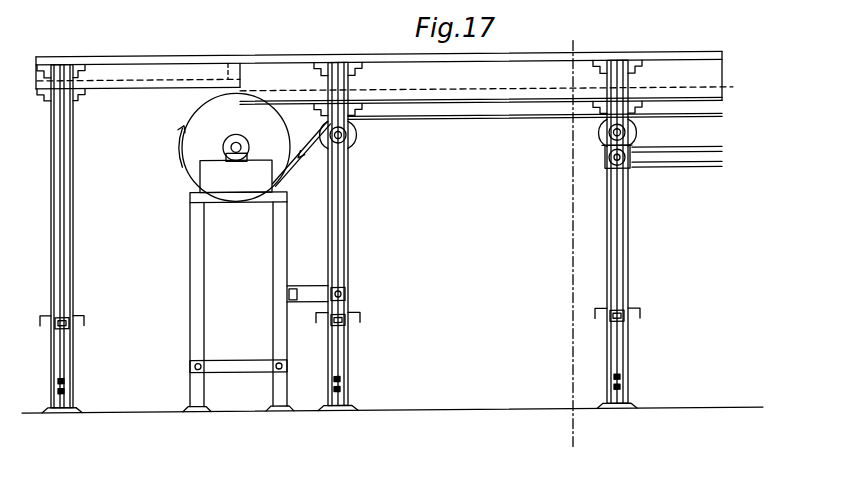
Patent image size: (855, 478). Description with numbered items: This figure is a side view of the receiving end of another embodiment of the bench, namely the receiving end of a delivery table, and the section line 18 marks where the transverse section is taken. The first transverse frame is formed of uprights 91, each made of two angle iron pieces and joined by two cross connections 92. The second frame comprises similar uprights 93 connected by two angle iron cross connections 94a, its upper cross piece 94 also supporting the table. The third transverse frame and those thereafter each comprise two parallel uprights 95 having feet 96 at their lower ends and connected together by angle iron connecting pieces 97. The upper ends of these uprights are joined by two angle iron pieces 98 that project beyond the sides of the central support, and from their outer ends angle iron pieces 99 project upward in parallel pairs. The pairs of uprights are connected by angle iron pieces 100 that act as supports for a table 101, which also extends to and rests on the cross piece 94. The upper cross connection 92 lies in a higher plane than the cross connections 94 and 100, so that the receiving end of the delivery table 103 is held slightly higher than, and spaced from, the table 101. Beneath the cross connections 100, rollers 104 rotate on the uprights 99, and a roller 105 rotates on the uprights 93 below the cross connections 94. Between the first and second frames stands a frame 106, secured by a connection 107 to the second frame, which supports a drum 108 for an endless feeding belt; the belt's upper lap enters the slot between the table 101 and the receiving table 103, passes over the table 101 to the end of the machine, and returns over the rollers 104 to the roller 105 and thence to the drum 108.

The section line 18- 18 is at (572, 245).
The uprights 91 is at (54, 239).
The cross connections 92 is at (84, 95).
The uprights 93 is at (348, 232).
The cross piece 94 is at (352, 118).
The cross connections 94a is at (378, 326).
The uprights 95 is at (629, 256).
The feet 96 is at (628, 412).
The angle iron connecting pieces 97 is at (640, 314).
The angle iron pieces 98 is at (632, 149).
The angle iron pieces 99 is at (605, 163).
The angle iron pieces 100 is at (646, 112).
The table 101 is at (722, 100).
The delivery table 103 is at (138, 79).
The rollers 104 is at (605, 131).
The roller 105 is at (350, 140).
The frame or stand 106 is at (196, 256).
The connection 107 is at (305, 284).
The drum 108 is at (186, 156).